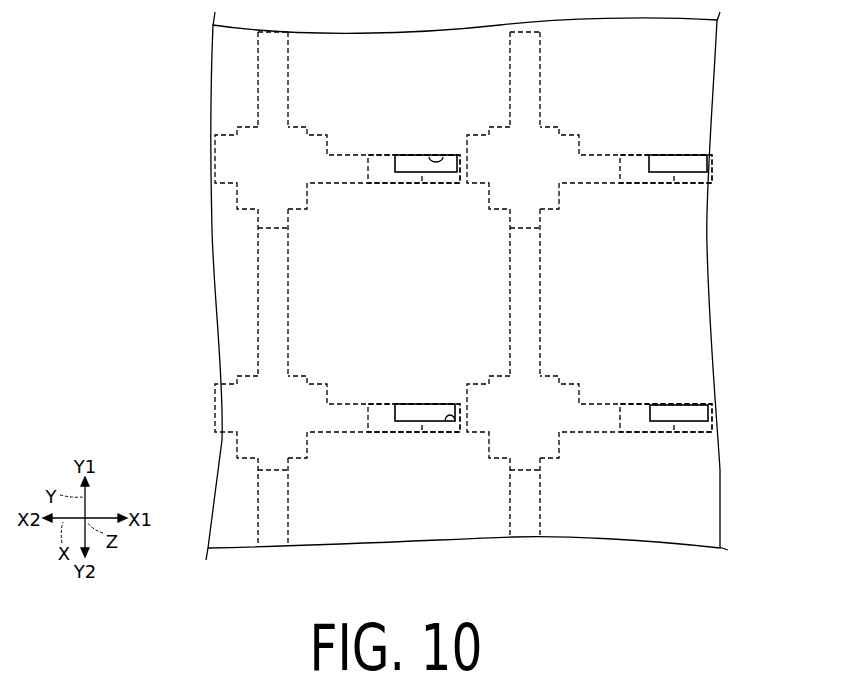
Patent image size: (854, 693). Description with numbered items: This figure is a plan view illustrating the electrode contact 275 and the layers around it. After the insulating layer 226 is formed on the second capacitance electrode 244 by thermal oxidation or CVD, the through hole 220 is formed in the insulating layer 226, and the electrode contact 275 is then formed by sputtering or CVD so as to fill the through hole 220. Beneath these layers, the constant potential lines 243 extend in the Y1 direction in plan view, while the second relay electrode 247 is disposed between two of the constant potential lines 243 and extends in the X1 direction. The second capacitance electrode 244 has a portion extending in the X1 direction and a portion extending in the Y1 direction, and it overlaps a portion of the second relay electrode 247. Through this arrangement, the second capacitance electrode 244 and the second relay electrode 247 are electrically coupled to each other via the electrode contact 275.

The through hole 220 is at (442, 157).
The insulating layer 226 is at (673, 70).
The constant potential line 243 is at (258, 223).
The second capacitance electrode 244 is at (237, 196).
The second relay electrode 247 is at (440, 185).
The electrode contact 275 is at (395, 168).